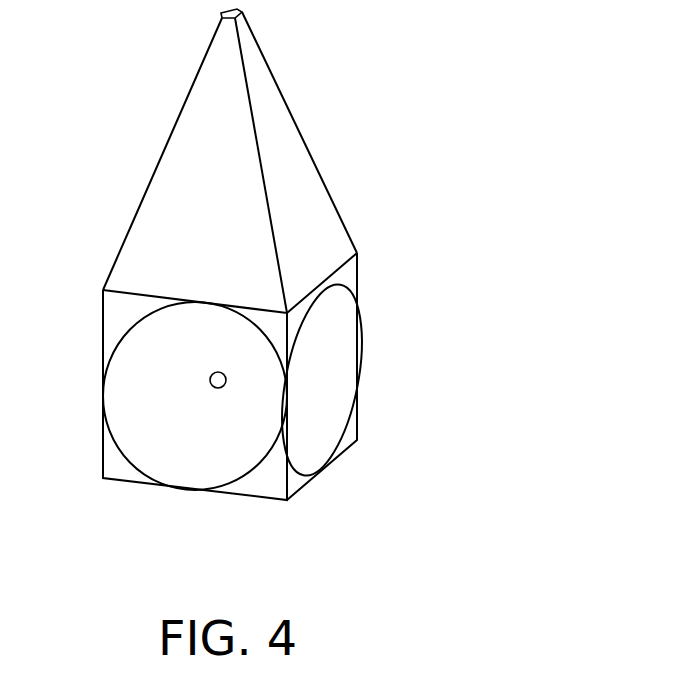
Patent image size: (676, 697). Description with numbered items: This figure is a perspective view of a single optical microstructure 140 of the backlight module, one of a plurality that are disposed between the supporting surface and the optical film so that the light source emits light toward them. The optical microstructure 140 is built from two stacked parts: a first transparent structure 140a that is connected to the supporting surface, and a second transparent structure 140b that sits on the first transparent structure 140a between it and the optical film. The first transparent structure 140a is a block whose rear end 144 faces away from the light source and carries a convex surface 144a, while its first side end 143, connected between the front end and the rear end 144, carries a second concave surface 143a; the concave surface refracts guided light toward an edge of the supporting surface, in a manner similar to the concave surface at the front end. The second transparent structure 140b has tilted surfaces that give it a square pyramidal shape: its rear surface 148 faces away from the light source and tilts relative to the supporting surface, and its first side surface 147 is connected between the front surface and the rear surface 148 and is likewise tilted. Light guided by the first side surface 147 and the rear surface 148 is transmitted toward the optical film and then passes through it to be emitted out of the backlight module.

The optical microstructure 140 is at (280, 278).
The first transparent structure 140a is at (277, 400).
The second transparent structure 140b is at (248, 161).
The first side end 143 is at (189, 418).
The second concave surface 143a is at (190, 424).
The rear end 144 is at (365, 390).
The convex surface 144a is at (331, 396).
The first side surface 147 is at (195, 180).
The rear surface 148 is at (285, 139).